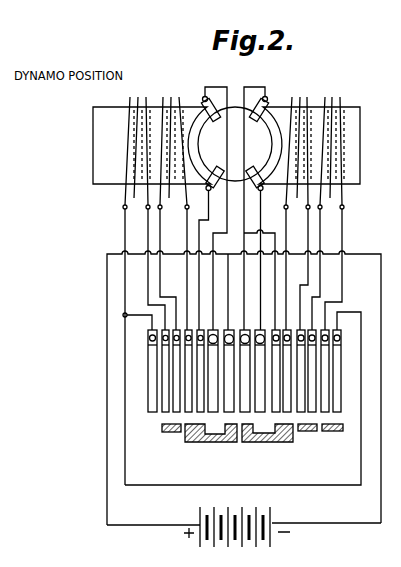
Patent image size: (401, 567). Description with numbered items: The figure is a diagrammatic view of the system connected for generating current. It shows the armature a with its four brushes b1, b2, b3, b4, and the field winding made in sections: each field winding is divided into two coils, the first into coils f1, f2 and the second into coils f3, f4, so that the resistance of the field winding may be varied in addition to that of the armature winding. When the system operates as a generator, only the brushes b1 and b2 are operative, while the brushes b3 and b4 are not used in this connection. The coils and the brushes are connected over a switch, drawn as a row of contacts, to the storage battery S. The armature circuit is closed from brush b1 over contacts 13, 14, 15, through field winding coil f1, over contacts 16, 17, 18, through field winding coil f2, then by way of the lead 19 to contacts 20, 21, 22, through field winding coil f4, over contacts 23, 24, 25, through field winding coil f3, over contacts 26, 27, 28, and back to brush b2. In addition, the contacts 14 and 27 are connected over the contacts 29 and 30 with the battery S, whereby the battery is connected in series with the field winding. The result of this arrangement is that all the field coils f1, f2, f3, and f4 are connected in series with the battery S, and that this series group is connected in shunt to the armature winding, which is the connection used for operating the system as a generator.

The armature a is at (235, 144).
The brush b1 is at (207, 248).
The brush b2 is at (262, 202).
The brush b3 is at (208, 202).
The brush b4 is at (262, 248).
The field winding coil f1 is at (170, 130).
The field winding coil f2 is at (132, 134).
The field winding coil f3 is at (300, 142).
The field winding coil f4 is at (338, 142).
The storage battery S is at (244, 519).
The contact 13 is at (152, 371).
The contact 14 is at (207, 442).
The contact 15 is at (190, 371).
The contact 16 is at (166, 371).
The contact 17 is at (171, 433).
The contact 18 is at (178, 371).
The lead 19 is at (125, 443).
The contact 20 is at (325, 371).
The contact 21 is at (331, 432).
The contact 22 is at (301, 371).
The contact 23 is at (289, 371).
The contact 24 is at (306, 432).
The contact 25 is at (278, 371).
The contact 26 is at (246, 371).
The contact 27 is at (270, 442).
The contact 28 is at (201, 371).
The contact 29 is at (313, 371).
The contact 30 is at (230, 371).